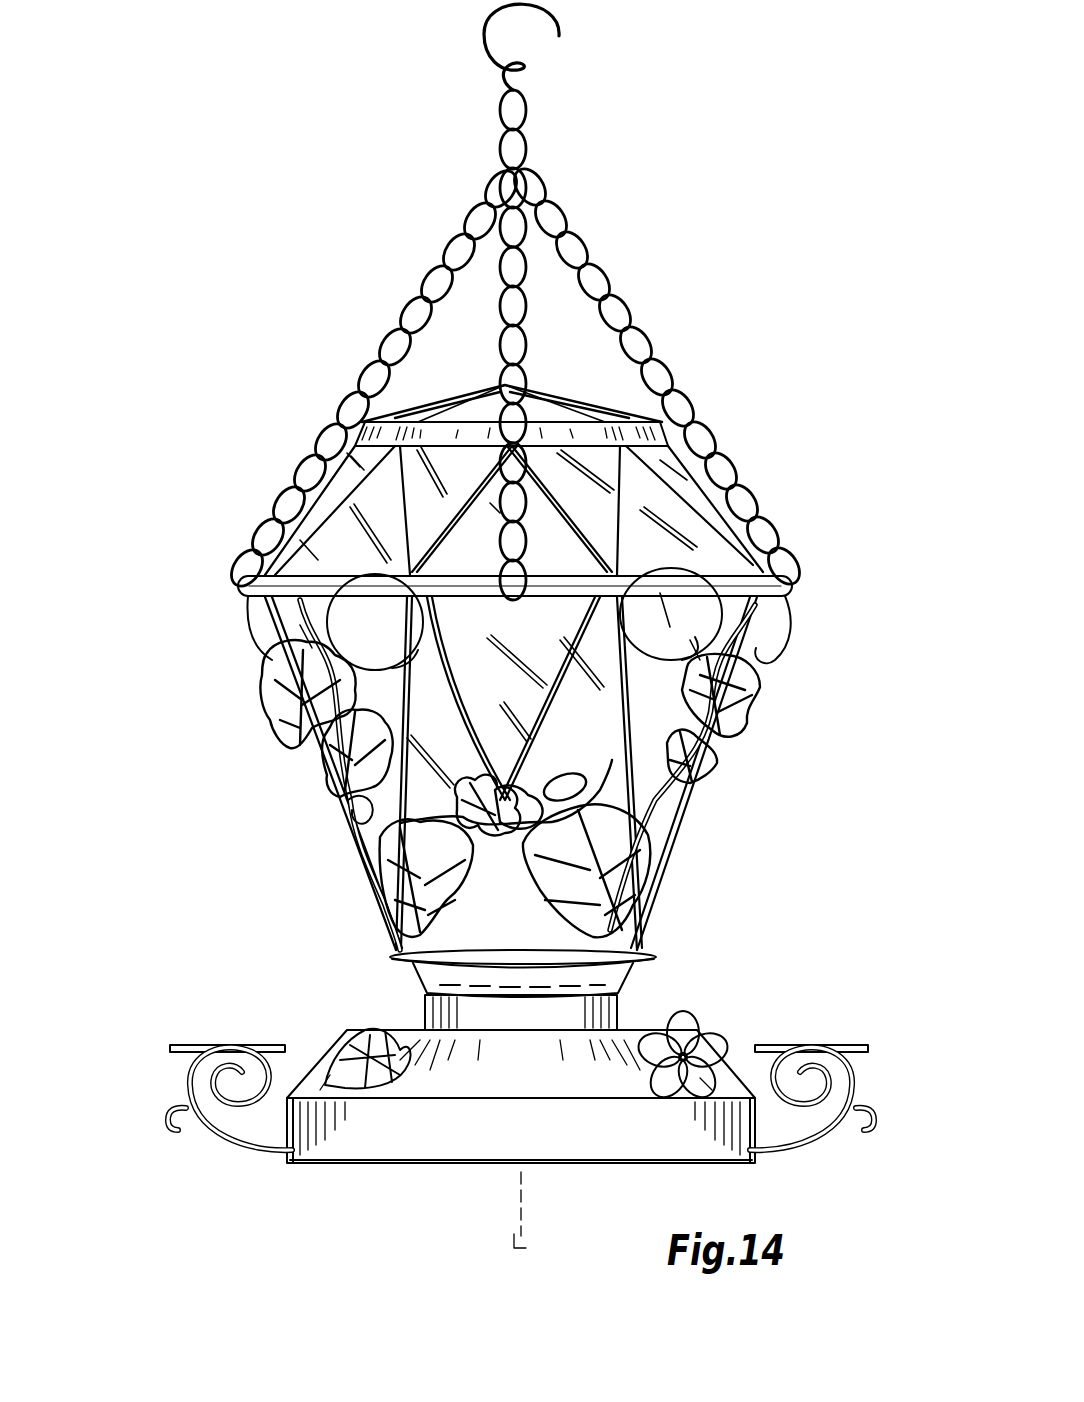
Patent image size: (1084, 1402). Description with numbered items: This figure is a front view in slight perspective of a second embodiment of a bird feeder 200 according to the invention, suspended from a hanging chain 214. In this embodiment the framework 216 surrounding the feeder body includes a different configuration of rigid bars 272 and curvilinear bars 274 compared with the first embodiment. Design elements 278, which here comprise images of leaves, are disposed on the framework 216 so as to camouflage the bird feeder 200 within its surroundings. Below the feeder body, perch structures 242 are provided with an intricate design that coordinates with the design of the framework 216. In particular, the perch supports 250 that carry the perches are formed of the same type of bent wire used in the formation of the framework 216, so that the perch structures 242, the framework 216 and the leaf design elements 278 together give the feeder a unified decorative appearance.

The bird feeder 200 is at (514, 707).
The hanging chain 214 is at (590, 372).
The framework 216 is at (820, 598).
The perch structures 242 is at (228, 1152).
The perch supports 250 is at (195, 1090).
The rigid bars 272 is at (345, 823).
The curvilinear bars 274 is at (573, 800).
The design elements 278 is at (297, 712).